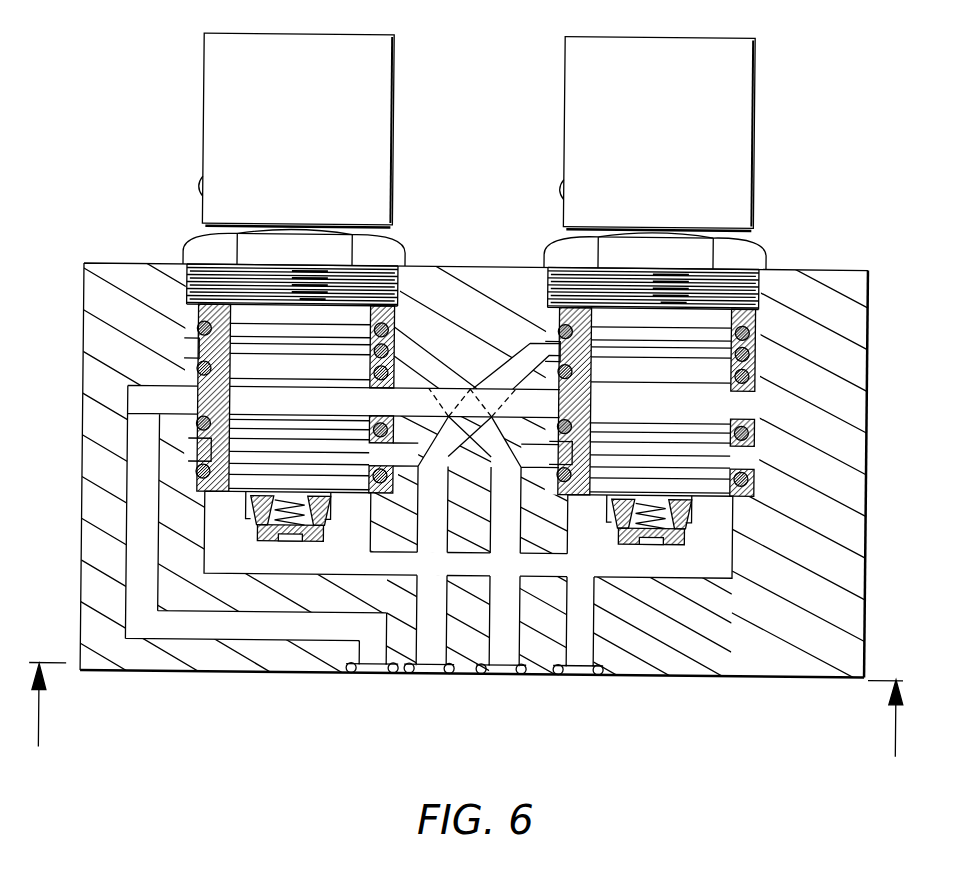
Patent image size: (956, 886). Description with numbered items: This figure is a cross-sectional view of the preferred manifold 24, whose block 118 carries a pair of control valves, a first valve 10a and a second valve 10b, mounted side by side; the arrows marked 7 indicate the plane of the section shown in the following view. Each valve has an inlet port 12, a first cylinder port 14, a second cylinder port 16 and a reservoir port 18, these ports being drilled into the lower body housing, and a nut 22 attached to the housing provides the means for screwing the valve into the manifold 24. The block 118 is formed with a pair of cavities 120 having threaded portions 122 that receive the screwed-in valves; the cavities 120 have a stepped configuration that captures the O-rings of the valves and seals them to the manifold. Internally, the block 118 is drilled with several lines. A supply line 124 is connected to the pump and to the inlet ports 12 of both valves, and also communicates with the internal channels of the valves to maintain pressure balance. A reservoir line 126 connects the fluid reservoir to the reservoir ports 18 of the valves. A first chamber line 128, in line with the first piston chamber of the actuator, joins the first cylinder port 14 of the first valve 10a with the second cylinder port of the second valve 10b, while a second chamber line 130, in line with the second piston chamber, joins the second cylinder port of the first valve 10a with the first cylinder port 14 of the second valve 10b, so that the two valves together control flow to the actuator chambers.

The section line 7- 7 is at (465, 711).
The first valve 10a is at (202, 78).
The second valve 10b is at (753, 71).
The inlet port 12 is at (290, 541).
The first cylinder port 14 is at (160, 410).
The second cylinder port 16 is at (199, 336).
The reservoir port 18 is at (238, 383).
The nut 22 is at (392, 246).
The manifold 24 is at (859, 260).
The block 118 is at (712, 657).
The cavities 120 is at (214, 261).
The threaded portions 122 is at (404, 280).
The supply line 124 is at (603, 635).
The reservoir line 126 is at (263, 628).
The first chamber line 128 is at (435, 632).
The second chamber line 130 is at (507, 639).